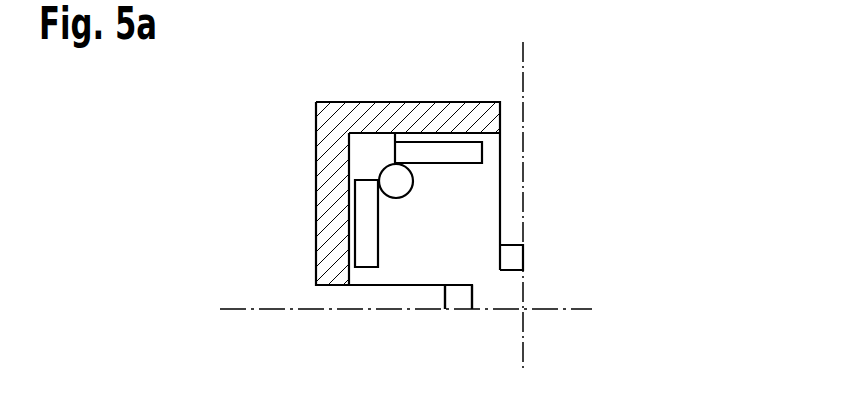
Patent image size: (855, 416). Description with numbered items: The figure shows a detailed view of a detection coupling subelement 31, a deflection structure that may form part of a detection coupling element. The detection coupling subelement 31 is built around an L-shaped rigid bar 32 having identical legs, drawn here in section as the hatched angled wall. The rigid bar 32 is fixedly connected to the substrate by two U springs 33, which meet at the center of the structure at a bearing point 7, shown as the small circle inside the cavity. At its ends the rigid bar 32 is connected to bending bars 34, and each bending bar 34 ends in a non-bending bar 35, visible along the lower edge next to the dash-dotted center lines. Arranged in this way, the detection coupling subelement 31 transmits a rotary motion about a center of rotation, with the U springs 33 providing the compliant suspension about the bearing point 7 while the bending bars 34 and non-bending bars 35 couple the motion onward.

The detection coupling subelement 31 is at (303, 82).
The L-shaped rigid bar 32 is at (322, 193).
The bearing point 7 is at (400, 183).
The U spring 33 is at (372, 247).
The bending bar 34 is at (392, 285).
The non-bending bar 35 is at (460, 298).